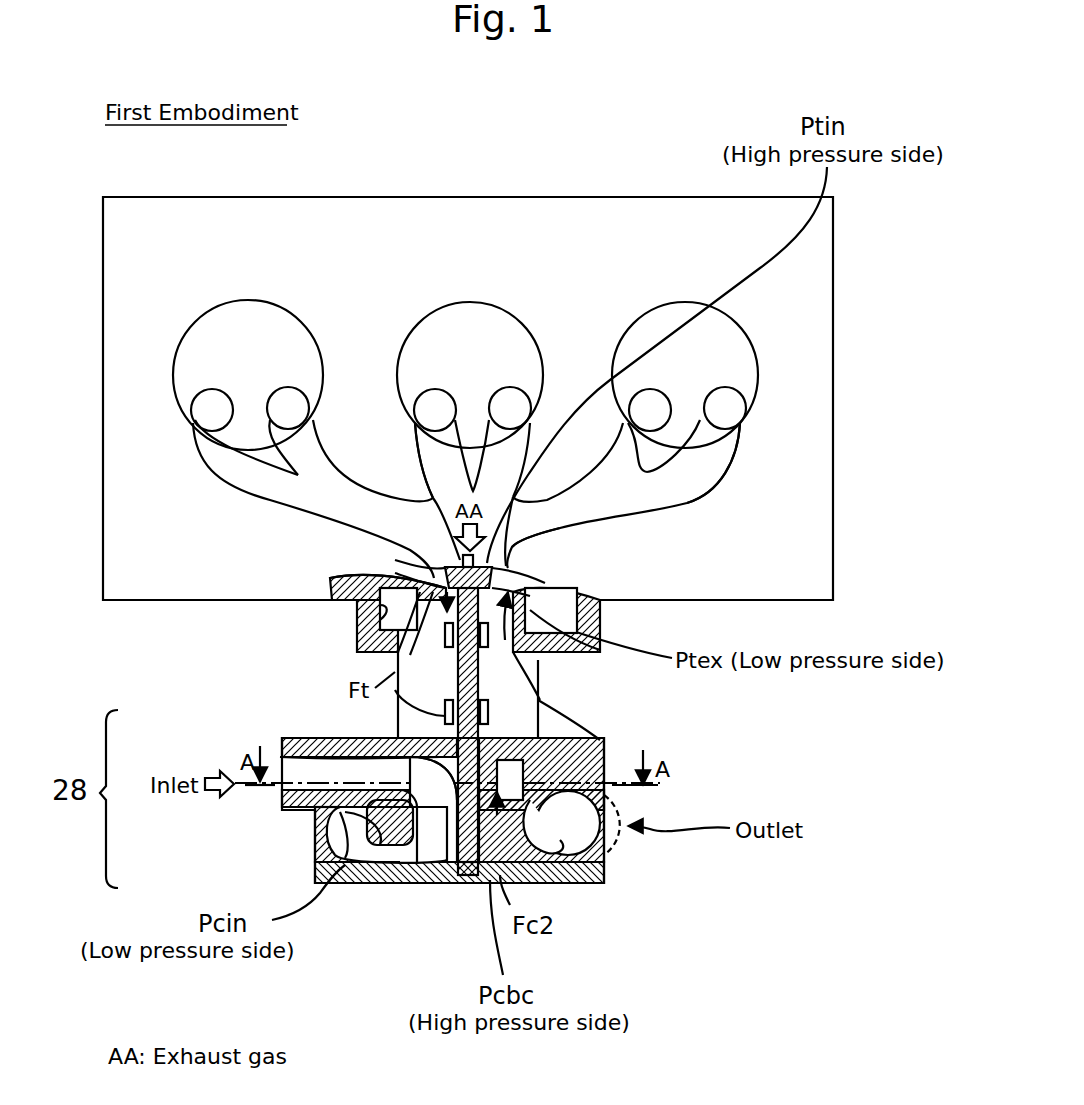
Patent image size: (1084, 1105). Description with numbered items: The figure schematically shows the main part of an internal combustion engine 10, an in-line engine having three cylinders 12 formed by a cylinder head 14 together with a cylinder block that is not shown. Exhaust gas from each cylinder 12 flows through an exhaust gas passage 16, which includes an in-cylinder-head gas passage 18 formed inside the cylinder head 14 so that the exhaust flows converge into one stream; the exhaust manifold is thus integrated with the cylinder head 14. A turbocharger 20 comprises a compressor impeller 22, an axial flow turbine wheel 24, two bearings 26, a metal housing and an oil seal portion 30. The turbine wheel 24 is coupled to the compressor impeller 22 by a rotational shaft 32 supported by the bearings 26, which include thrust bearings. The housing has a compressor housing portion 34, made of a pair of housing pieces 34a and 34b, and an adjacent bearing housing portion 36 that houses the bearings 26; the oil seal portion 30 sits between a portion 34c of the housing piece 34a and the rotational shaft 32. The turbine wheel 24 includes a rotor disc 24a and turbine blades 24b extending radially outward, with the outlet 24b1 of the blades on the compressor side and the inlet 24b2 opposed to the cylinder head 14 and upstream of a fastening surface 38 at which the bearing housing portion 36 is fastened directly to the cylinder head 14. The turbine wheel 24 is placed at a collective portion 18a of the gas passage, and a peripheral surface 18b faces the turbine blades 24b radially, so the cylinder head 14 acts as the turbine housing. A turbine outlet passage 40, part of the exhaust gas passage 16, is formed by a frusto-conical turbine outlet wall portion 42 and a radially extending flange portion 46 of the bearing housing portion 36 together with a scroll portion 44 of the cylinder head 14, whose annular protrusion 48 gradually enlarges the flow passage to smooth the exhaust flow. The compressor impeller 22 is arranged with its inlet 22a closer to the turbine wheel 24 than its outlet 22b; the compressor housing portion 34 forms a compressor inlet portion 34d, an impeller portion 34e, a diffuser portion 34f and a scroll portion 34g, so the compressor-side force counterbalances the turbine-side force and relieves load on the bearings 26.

The internal combustion engine 10 is at (674, 152).
The cylinder 12 is at (255, 301).
The cylinder head 14 is at (833, 405).
The exhaust gas passage 16 is at (697, 509).
The in-cylinder-head gas passage 18 is at (250, 497).
The collective portion 18a is at (422, 545).
The peripheral surface 18b is at (540, 535).
The turbocharger 20 is at (485, 702).
The compressor impeller 22 is at (456, 861).
The inlet 22a is at (460, 875).
The outlet 22b is at (400, 885).
The axial flow turbine wheel 24 is at (469, 635).
The rotor disc 24a is at (440, 565).
The turbine blades 24b is at (548, 580).
The outlet of the turbine blades 24b1 is at (420, 600).
The inlet of the turbine blades 24b2 is at (425, 557).
The bearings 26 is at (488, 713).
The oil seal portion 30 is at (398, 716).
The rotational shaft 32 is at (580, 718).
The compressor housing portion 34 is at (425, 859).
The housing piece 34a is at (312, 805).
The housing piece 34b is at (310, 868).
The portion of the compressor housing portion 34c is at (600, 745).
The compressor inlet portion 34d is at (330, 760).
The impeller portion 34e is at (417, 880).
The diffuser portion 34f is at (375, 880).
The scroll portion 34g is at (355, 878).
The bearing housing portion 36 is at (405, 757).
The fastening surface 38 is at (620, 656).
The turbine outlet passage 40 is at (560, 612).
The turbine outlet wall portion 42 is at (405, 655).
The scroll portion 44 is at (357, 618).
The flange portion 46 is at (590, 655).
The annular protrusion 48 is at (333, 580).